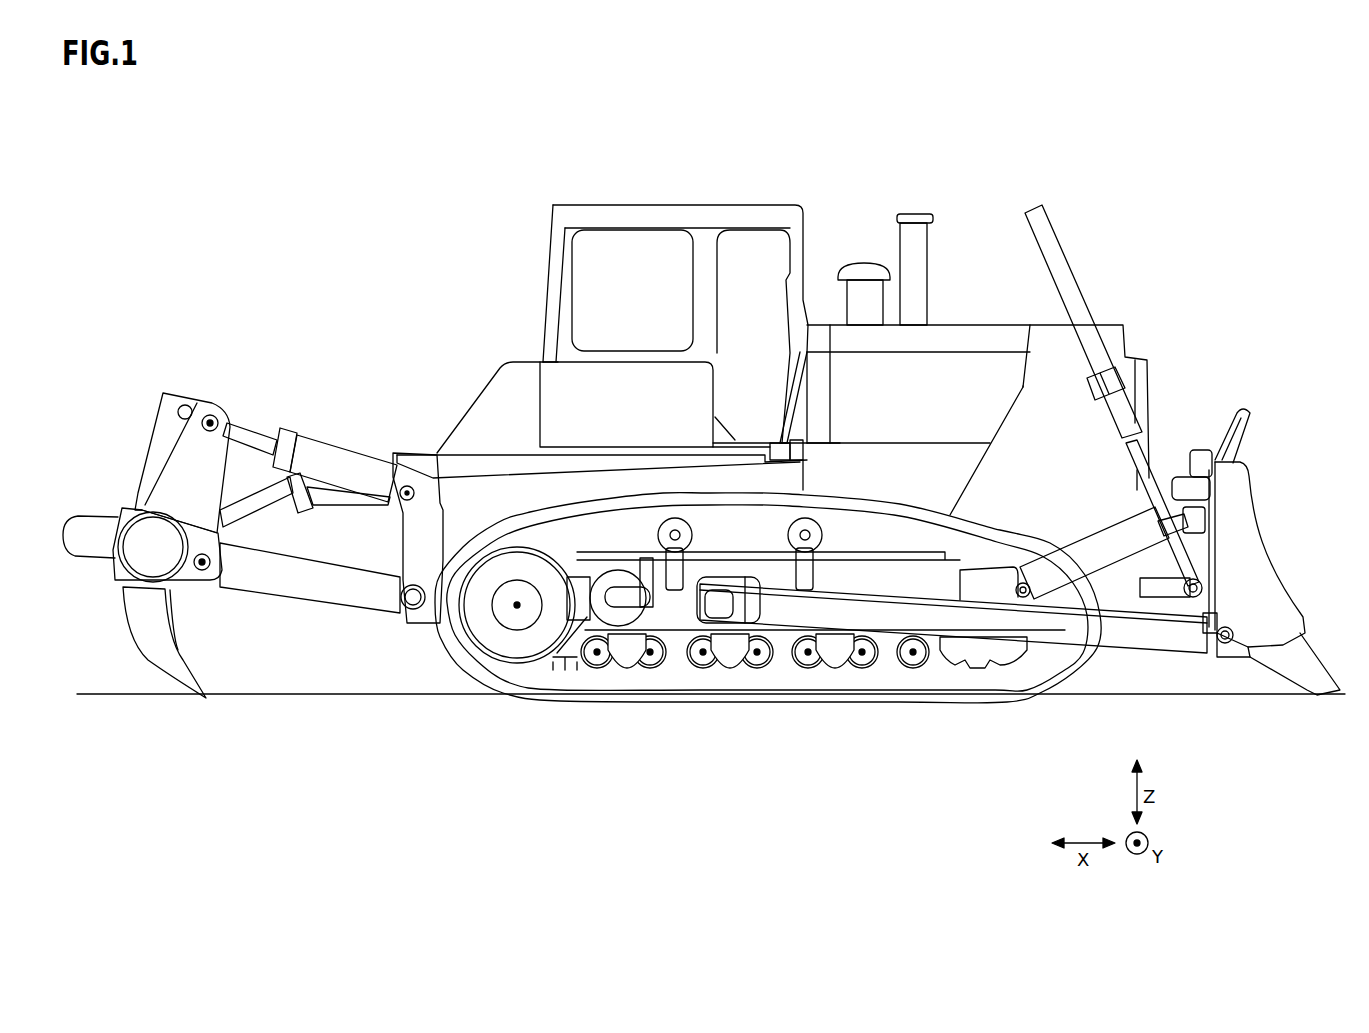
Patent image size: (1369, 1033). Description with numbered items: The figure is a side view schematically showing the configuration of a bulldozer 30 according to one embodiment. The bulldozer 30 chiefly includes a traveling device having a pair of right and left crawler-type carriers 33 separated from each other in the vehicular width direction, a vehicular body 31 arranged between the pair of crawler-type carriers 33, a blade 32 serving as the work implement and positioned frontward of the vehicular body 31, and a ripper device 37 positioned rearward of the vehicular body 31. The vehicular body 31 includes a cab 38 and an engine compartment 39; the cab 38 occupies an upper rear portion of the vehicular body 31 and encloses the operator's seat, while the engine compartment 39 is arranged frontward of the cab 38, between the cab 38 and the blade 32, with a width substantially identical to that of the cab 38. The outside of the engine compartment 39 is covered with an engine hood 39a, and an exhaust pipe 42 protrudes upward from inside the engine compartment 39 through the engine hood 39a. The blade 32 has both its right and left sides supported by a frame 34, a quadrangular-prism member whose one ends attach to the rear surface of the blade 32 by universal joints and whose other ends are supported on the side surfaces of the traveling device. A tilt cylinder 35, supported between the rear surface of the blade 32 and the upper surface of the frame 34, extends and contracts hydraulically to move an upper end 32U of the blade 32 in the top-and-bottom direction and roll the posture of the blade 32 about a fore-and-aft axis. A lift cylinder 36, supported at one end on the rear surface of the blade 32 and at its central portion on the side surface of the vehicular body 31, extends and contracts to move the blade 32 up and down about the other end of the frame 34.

The bulldozer 30 is at (595, 170).
The vehicular body 31 is at (963, 380).
The blade 32 is at (1240, 523).
The upper end of blade 32U is at (1242, 400).
The crawler-type carrier 33 is at (737, 701).
The frame 34 is at (1088, 627).
The tilt cylinder 35 is at (1120, 550).
The lift cylinder 36 is at (1045, 225).
The ripper device 37 is at (255, 440).
The cab 38 is at (697, 227).
The engine compartment 39 is at (840, 380).
The engine hood 39a is at (998, 375).
The exhaust pipe 42 is at (915, 235).